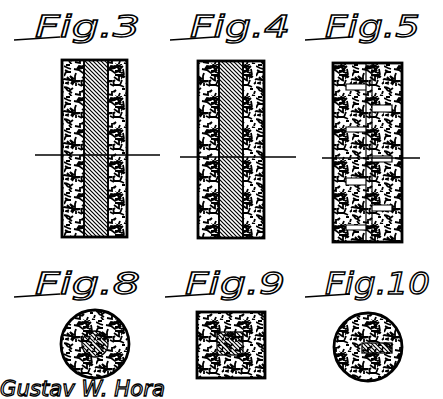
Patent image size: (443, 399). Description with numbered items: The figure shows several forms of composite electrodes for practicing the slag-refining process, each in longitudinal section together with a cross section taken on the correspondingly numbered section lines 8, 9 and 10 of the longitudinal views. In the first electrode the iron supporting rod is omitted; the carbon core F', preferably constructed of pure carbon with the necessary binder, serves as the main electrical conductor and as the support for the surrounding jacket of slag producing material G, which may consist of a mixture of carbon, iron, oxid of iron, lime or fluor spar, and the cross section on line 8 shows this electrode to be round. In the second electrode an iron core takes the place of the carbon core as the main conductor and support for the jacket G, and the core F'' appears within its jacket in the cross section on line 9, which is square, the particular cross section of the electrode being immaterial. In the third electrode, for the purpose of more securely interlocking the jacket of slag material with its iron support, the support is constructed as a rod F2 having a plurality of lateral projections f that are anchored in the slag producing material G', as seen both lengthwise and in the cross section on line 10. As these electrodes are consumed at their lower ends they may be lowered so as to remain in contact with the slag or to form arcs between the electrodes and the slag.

In FIG. 3, the casing of porous material G is at (79, 148).
In FIG. 4, the casing of porous material G is at (218, 149).
In FIG. 8, the casing of porous material G is at (79, 344).
In FIG. 9, the casing of porous material G is at (218, 342).
In FIG. 3, the core of heat-absorbing material F' is at (60, 148).
In FIG. 4, the core of heat-absorbing material F' is at (221, 164).
In FIG. 8, the core of heat-absorbing material F' is at (58, 352).
In FIG. 3, the section line 8— 8 is at (94, 155).
In FIG. 4, the section line 9— 9 is at (234, 156).
In FIG. 5, the section line 10— 10 is at (371, 157).
In FIG. 5, the lateral projections f is at (393, 108).
In FIG. 10, the lateral projections f is at (395, 347).
In FIG. 5, the rod F2 is at (372, 242).
In FIG. 5, the slag producing material G' is at (324, 228).
In FIG. 10, the slag producing material G' is at (356, 347).
In FIG. 9, the core F'' is at (201, 346).